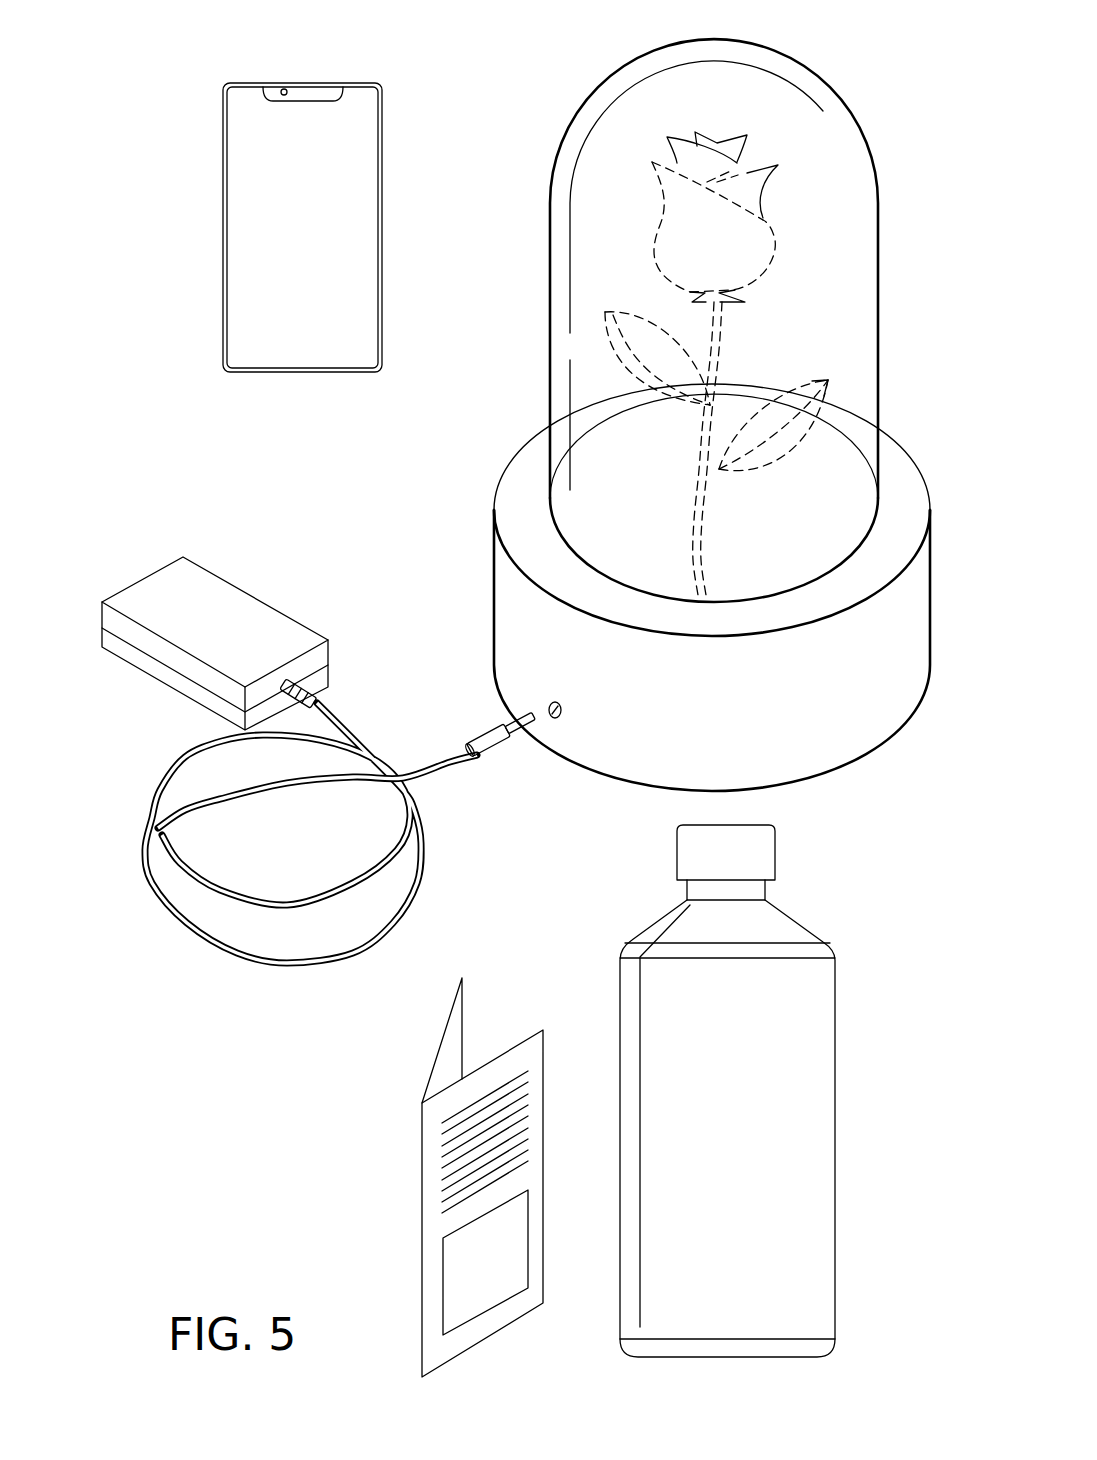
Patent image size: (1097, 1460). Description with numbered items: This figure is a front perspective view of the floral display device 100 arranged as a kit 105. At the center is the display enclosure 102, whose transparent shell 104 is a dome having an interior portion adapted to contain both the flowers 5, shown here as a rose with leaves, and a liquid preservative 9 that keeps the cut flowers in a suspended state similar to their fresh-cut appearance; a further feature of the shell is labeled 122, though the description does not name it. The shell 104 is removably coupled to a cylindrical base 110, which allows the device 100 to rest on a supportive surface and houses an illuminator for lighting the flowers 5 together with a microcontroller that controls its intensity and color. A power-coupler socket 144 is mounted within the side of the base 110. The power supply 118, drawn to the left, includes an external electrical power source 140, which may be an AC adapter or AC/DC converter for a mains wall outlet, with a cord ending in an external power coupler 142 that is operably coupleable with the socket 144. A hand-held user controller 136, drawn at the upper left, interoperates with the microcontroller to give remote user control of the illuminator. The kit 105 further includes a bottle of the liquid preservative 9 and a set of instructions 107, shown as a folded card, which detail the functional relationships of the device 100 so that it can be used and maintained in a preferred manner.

The floral display device 100 is at (188, 78).
The display enclosure 102 is at (526, 141).
The transparent shell 104 is at (826, 78).
The dome cover 122 is at (805, 62).
The flowers 5 is at (770, 232).
The base 110 is at (826, 759).
The power-coupler socket 144 is at (546, 702).
The hand-held user controller 136 is at (268, 368).
The power supply 118 is at (216, 546).
The external electrical power source 140 is at (247, 588).
The external power coupler 142 is at (505, 760).
The liquid preservative 9 is at (803, 927).
The kit 105 is at (337, 1058).
The set of instructions 107 is at (422, 1186).